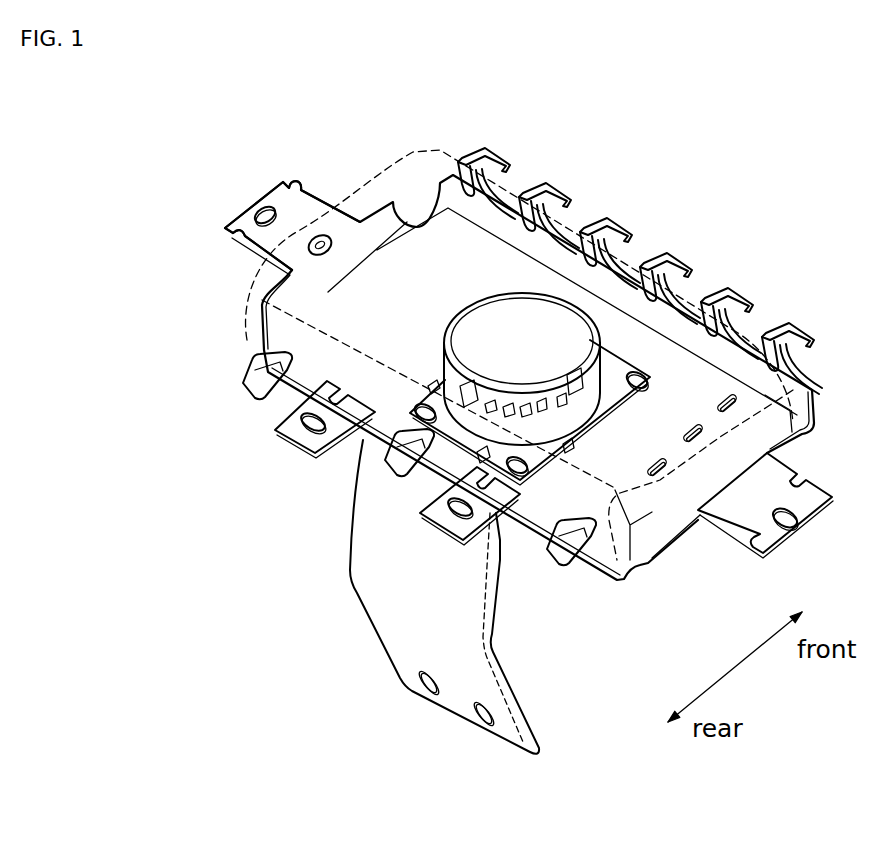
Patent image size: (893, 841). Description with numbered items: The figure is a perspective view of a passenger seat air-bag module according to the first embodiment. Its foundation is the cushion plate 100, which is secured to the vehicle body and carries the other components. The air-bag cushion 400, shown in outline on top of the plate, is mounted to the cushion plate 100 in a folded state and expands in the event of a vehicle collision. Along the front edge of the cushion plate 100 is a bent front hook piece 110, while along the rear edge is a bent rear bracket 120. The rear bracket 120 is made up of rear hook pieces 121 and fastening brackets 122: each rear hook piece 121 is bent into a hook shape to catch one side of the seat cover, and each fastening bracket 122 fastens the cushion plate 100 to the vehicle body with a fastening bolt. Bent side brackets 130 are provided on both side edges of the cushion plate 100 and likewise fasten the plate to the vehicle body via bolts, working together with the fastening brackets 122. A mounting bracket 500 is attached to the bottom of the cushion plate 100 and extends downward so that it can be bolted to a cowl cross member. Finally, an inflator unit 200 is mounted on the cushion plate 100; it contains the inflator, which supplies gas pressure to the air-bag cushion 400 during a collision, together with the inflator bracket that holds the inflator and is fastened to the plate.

The cushion plate 100 is at (633, 572).
The front hook piece 110 is at (790, 328).
The rear bracket 120 is at (168, 508).
The rear hook piece 121 is at (247, 380).
The fastening bracket 122 is at (297, 437).
The side bracket 130 is at (288, 205).
The inflator unit 200 is at (520, 323).
The air-bag cushion 400 is at (417, 170).
The mounting bracket 500 is at (415, 640).